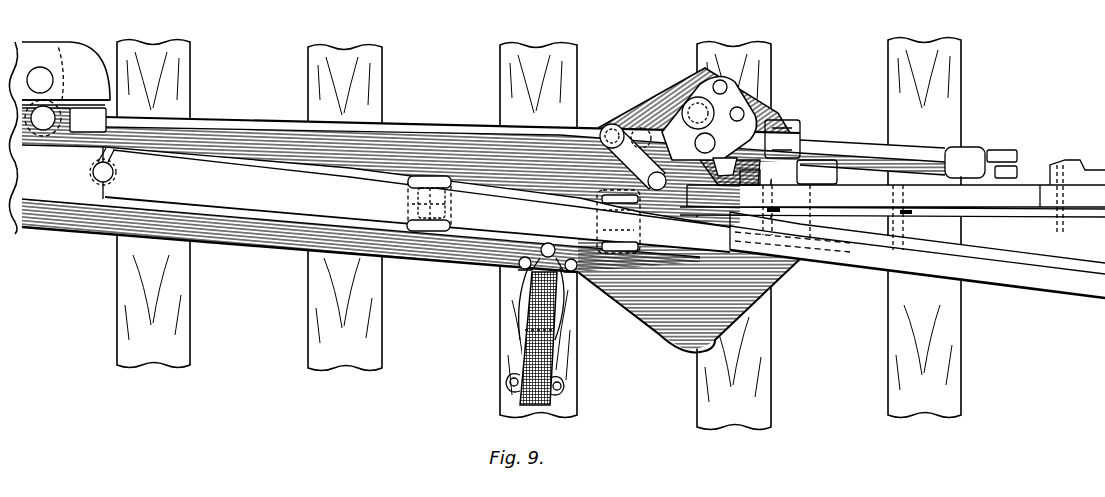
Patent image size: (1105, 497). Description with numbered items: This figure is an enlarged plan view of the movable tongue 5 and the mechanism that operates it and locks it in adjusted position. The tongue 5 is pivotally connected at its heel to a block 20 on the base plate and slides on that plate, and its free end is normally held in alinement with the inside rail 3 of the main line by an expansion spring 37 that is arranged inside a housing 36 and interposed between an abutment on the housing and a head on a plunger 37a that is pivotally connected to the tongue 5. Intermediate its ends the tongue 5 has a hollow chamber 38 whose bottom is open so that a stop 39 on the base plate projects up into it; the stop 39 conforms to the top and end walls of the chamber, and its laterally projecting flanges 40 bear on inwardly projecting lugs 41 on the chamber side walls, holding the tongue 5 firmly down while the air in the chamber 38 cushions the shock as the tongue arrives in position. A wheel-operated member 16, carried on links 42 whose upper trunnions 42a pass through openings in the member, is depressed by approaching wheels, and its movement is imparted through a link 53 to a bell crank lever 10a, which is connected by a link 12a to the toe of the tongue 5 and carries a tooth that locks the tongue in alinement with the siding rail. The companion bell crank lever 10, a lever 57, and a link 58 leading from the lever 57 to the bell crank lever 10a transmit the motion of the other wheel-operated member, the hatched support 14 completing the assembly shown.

The inside rail of the main track 3 is at (1046, 275).
The movable tongue 5 is at (376, 211).
The bell crank lever 10 is at (432, 178).
The bell crank lever 10a is at (666, 102).
The link 12a is at (630, 168).
The bracket 14 is at (689, 295).
The wheel-operated member 16 is at (1035, 212).
The block 20 is at (69, 152).
The housing 36 is at (548, 340).
The expansion spring 37 is at (525, 330).
The plunger 37a is at (524, 272).
The hollow chamber 38 is at (408, 220).
The stop 39 is at (446, 202).
The laterally projecting flanges 40 is at (597, 215).
The inwardly projecting lugs 41 is at (619, 303).
The links 42 is at (1060, 162).
The trunnions 42a is at (1047, 212).
The link 53 is at (862, 140).
The lever 57 is at (56, 63).
The link 58 is at (240, 124).